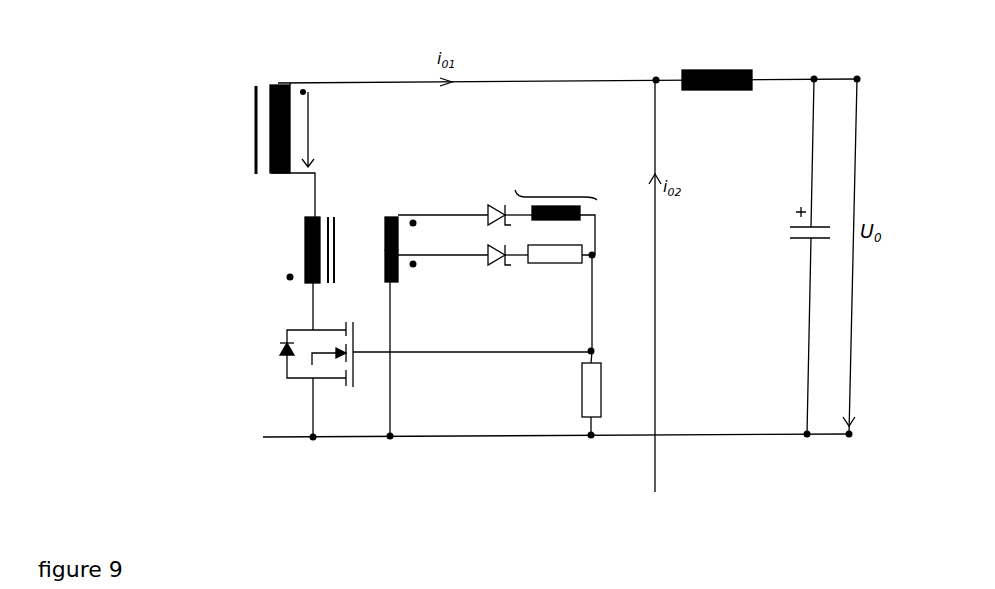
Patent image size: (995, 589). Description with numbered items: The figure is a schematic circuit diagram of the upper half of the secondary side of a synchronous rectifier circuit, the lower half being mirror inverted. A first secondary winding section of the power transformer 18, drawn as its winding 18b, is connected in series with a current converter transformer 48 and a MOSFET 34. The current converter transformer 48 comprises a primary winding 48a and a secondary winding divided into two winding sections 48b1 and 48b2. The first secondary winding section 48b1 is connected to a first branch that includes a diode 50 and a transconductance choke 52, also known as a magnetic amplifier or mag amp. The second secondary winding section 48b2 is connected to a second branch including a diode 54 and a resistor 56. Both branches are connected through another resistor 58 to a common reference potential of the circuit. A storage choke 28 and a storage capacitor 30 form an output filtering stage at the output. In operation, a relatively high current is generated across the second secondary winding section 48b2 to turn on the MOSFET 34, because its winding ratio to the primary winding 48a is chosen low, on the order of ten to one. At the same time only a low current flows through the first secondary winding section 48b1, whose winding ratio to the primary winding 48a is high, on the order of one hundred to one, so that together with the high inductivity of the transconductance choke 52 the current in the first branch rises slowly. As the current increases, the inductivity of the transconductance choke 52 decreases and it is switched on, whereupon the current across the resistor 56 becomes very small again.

The power transformer 18 is at (247, 75).
The secondary winding of transformer 18b is at (279, 82).
The current converter transformer 48 is at (371, 168).
The primary winding 48a is at (305, 225).
The first secondary winding section 48b1 is at (393, 213).
The second secondary winding section 48b2 is at (398, 282).
The diode 50 is at (487, 160).
The transconductance choke 52 is at (560, 150).
The diode 54 is at (500, 307).
The resistor 56 is at (568, 253).
The resistor 58 is at (588, 378).
The MOSFET 34 is at (287, 367).
The storage choke 28 is at (747, 67).
The storage capacitor 30 is at (832, 197).